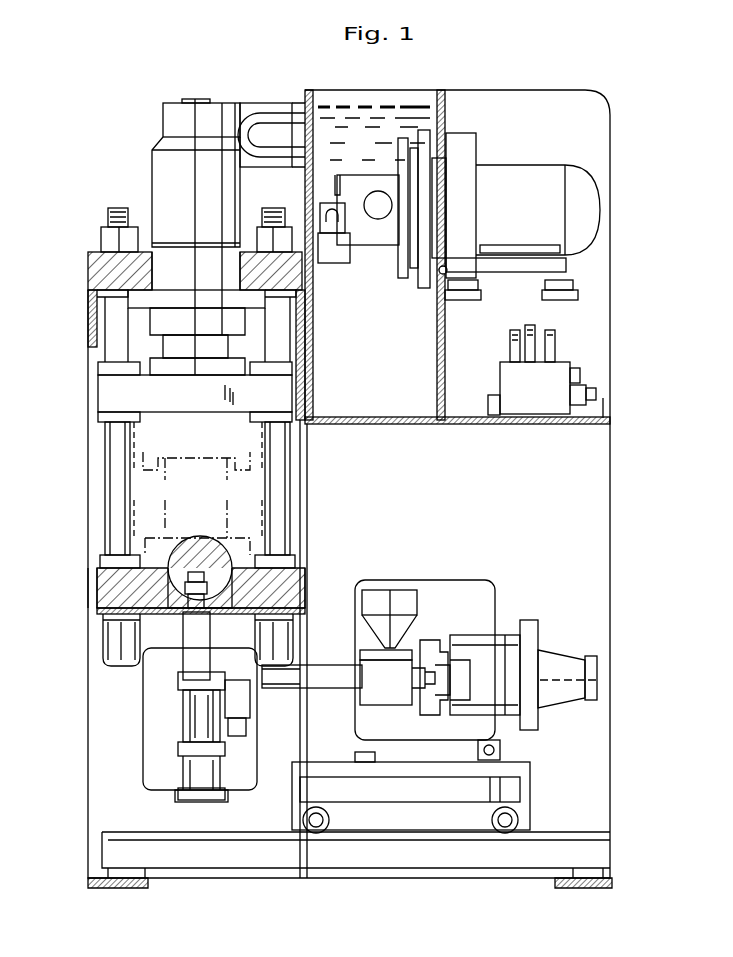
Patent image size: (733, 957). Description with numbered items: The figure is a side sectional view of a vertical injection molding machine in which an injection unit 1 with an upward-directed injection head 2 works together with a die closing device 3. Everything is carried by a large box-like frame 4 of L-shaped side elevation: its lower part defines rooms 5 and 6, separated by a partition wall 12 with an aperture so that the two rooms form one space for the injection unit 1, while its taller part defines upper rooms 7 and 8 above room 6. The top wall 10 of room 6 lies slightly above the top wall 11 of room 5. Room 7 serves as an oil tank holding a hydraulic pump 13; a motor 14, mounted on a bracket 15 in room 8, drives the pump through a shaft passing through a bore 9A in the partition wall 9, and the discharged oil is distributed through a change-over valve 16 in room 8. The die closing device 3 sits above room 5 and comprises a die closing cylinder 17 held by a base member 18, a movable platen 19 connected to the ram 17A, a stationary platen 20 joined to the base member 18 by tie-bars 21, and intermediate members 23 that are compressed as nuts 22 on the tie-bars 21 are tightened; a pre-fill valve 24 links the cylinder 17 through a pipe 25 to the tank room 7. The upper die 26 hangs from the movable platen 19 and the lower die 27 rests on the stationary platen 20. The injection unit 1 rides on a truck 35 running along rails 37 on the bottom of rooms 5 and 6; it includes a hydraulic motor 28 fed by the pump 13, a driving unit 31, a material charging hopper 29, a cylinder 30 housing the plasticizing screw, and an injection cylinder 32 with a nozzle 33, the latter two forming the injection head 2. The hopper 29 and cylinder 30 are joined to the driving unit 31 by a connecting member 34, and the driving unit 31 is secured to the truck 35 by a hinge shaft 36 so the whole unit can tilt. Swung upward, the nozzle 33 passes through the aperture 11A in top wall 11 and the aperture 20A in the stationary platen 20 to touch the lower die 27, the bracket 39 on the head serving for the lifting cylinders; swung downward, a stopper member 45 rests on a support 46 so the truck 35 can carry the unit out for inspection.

The injection unit 1 is at (470, 640).
The injection head 2 is at (185, 665).
The die closing device 3 is at (112, 443).
The frame 4 is at (612, 487).
The room 5 is at (125, 780).
The room 6 is at (585, 617).
The room 7 is at (367, 110).
The room 8 is at (533, 105).
The partition wall 9 is at (445, 105).
The bore 9A is at (438, 272).
The top wall 10 is at (466, 425).
The top wall 11 is at (165, 612).
The aperture 11A is at (175, 625).
The partition wall 12 is at (308, 722).
The hydraulic pump 13 is at (373, 245).
The motor 14 is at (545, 175).
The bracket 15 is at (464, 300).
The change-over valve 16 is at (548, 345).
The die closing cylinder 17 is at (160, 162).
The ram 17A is at (175, 350).
The base member 18 is at (95, 270).
The movable platen 19 is at (118, 395).
The stationary platen 20 is at (97, 583).
The aperture 20A is at (140, 592).
The tie-bars 21 is at (115, 487).
The nuts 22 is at (108, 240).
The intermediate members 23 is at (90, 318).
The pre-fill valve 24 is at (250, 103).
The pipe 25 is at (283, 130).
The upper die 26 is at (196, 491).
The lower die 27 is at (197, 506).
The hydraulic motor 28 is at (575, 680).
The material charging hopper 29 is at (375, 598).
The cylinder 30 is at (335, 672).
The driving unit 31 is at (485, 645).
The injection cylinder 32 is at (205, 632).
The nozzle 33 is at (198, 568).
The connecting member 34 is at (438, 722).
The truck 35 is at (487, 835).
The hinge shaft 36 is at (505, 752).
The rails 37 is at (278, 860).
The bracket 39 is at (205, 802).
The stopper member 45 is at (365, 705).
The support 46 is at (410, 777).